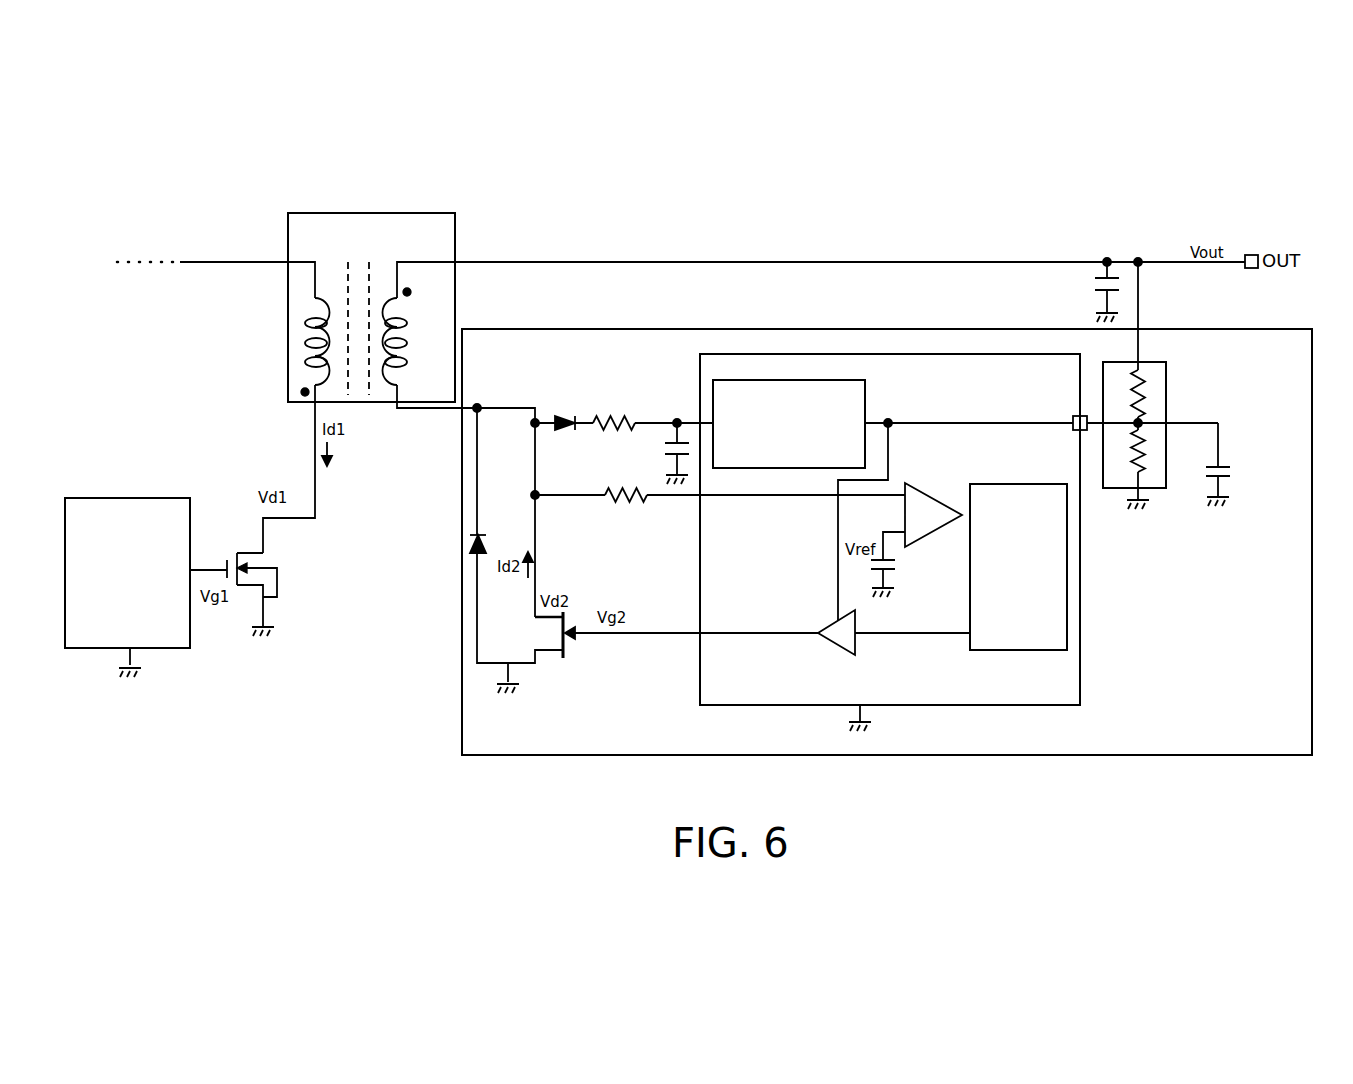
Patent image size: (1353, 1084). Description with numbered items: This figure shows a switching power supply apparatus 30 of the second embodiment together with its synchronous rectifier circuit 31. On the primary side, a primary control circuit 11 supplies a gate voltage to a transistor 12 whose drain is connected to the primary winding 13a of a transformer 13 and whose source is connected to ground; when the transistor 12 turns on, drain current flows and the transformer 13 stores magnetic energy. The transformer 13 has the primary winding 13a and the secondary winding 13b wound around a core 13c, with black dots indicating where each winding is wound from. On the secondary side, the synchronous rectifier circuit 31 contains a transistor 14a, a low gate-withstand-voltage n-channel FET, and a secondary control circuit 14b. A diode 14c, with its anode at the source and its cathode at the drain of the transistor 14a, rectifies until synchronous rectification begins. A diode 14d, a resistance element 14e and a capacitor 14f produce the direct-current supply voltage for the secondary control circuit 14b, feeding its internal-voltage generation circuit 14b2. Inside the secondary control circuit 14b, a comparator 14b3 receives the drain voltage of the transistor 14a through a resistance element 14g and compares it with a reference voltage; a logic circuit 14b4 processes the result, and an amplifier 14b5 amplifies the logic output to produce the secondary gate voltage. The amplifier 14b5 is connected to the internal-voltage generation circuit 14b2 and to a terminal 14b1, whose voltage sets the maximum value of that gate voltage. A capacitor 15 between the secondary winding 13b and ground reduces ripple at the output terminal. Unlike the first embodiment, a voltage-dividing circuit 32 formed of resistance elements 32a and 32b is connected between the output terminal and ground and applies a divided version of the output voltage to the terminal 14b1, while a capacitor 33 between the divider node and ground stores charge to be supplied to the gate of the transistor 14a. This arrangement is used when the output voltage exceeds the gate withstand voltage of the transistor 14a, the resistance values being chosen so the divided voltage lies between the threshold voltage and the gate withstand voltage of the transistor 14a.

The primary control circuit 11 is at (128, 497).
The transistor 12 is at (253, 553).
The transformer 13 is at (341, 316).
The primary winding 13a is at (305, 318).
The secondary winding 13b is at (385, 385).
The core 13c is at (348, 269).
The transistor 14a is at (547, 652).
The secondary control circuit 14b is at (940, 517).
The terminal 14b1 is at (1086, 432).
The internal-voltage generation circuit 14b2 is at (753, 468).
The comparator 14b3 is at (905, 483).
The logic circuit 14b4 is at (982, 483).
The amplifier 14b5 is at (833, 620).
The diode 14c is at (468, 540).
The diode 14d is at (567, 415).
The resistance element 14e is at (607, 417).
The capacitor 14f is at (663, 443).
The resistance element 14g is at (638, 498).
The capacitor 15 is at (1102, 273).
The switching power supply apparatus 30 is at (1309, 209).
The synchronous rectifier circuit 31 is at (1250, 329).
The voltage-dividing circuit 32 is at (1160, 419).
The resistance element 32a is at (1145, 397).
The resistance element 32b is at (1145, 465).
The capacitor 33 is at (1227, 463).